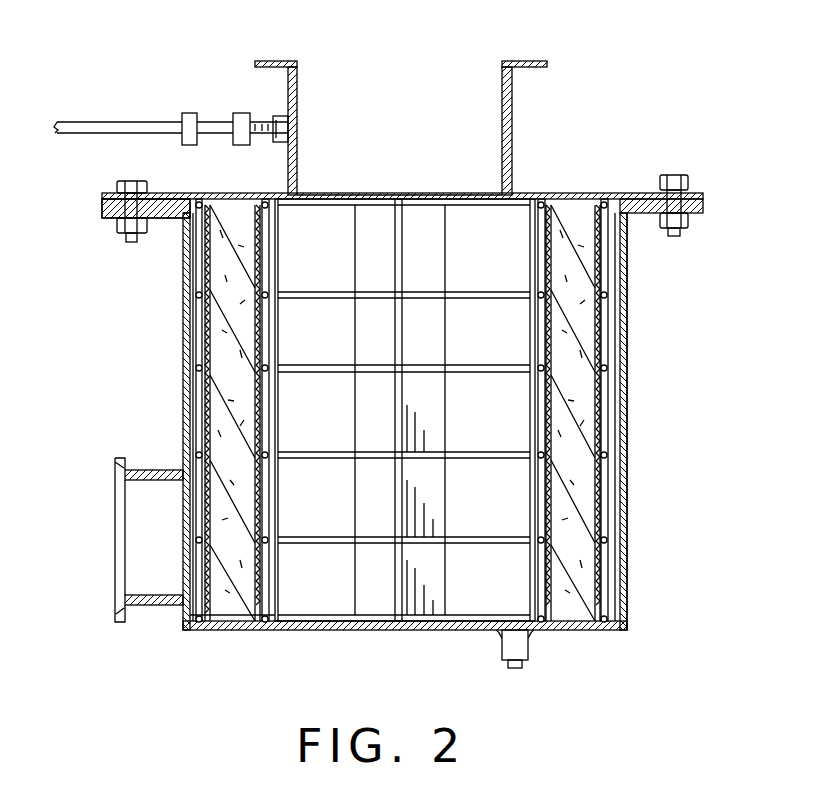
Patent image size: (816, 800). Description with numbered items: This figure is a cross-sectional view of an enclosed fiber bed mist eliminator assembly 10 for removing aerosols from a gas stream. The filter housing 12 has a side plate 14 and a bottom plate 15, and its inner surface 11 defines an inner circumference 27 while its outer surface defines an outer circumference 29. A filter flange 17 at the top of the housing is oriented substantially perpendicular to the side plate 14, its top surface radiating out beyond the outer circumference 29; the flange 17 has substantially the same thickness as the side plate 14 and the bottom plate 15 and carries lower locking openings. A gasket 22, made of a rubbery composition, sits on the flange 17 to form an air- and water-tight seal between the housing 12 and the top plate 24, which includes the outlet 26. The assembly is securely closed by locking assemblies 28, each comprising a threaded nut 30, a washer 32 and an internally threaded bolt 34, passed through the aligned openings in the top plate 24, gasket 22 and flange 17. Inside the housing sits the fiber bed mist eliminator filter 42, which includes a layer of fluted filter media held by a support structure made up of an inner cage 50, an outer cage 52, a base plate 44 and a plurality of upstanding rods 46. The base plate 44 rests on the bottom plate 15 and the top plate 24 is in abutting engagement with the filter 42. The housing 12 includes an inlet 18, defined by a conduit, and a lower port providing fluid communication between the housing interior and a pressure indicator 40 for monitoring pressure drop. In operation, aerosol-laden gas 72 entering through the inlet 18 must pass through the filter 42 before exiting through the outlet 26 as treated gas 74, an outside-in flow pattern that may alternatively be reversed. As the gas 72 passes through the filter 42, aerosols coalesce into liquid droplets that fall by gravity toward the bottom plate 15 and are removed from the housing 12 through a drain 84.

The fiber bed mist eliminator assembly 10 is at (713, 142).
The inner surface 11 is at (615, 305).
The filter housing 12 is at (630, 345).
The side plate 14 is at (628, 398).
The bottom plate 15 is at (232, 632).
The filter flange 17 is at (638, 215).
The inlet 18 is at (118, 497).
The gasket 22 is at (700, 200).
The top plate 24 is at (517, 192).
The outlet 26 is at (312, 60).
The inner circumference 27 is at (178, 232).
The locking assembly 28 is at (112, 185).
The outer circumference 29 is at (178, 222).
The threaded nut 30 is at (127, 181).
The washer 32 is at (102, 220).
The internally threaded bolt 34 is at (117, 230).
The pressure indicator 40 is at (404, 410).
The fiber bed mist eliminator filter 42 is at (585, 462).
The base plate 44 is at (318, 634).
The upstanding rods 46 is at (270, 190).
The inner cage 50 is at (265, 632).
The outer cage 52 is at (203, 633).
The aerosol-laden gas 72 is at (168, 537).
The treated gas 74 is at (382, 165).
The drain 84 is at (505, 650).